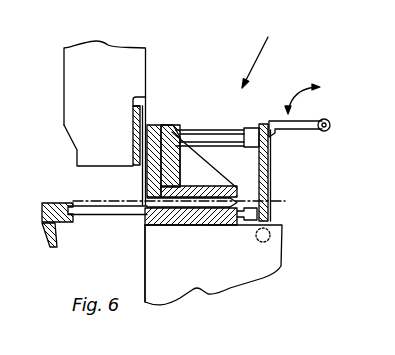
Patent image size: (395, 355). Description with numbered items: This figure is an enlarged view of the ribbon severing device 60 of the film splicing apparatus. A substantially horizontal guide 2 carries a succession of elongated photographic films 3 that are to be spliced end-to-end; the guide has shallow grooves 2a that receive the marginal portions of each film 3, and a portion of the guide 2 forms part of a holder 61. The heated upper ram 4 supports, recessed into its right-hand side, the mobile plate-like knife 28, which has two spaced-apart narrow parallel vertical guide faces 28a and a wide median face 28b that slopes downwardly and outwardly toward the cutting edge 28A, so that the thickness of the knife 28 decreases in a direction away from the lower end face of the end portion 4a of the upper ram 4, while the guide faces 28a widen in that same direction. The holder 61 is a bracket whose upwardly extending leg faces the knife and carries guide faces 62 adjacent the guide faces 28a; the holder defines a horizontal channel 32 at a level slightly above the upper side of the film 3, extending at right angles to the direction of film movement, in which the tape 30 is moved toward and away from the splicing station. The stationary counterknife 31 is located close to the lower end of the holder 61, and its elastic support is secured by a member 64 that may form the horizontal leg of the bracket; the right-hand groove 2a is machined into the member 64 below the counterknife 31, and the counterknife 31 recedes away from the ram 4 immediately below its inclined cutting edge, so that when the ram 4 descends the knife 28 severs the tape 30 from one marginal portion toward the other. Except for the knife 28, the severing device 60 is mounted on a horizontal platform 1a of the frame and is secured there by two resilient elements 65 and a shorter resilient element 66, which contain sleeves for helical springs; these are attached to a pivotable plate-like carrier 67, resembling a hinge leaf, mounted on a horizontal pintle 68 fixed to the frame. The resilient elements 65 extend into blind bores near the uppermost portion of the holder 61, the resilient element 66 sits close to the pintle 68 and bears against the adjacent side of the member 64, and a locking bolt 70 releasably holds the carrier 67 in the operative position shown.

The platform 1a is at (203, 282).
The guide 2 is at (44, 232).
The grooves 2a is at (153, 227).
The photographic film 3 is at (89, 218).
The upper ram 4 is at (72, 80).
The end portion 4a is at (84, 150).
The mobile knife 28 is at (147, 91).
The guide faces 28a is at (141, 102).
The median face 28b is at (143, 117).
The cutting edge 28A is at (137, 160).
The tape 30 is at (84, 199).
The counterknife 31 is at (147, 192).
The channel 32 is at (217, 181).
The severing device 60 is at (261, 52).
The holder 61 is at (173, 128).
The guide faces 62 is at (143, 177).
The member 64 is at (210, 226).
The resilient elements 65 is at (245, 129).
The resilient element 66 is at (247, 226).
The carrier 67 is at (268, 166).
The pintle 68 is at (285, 243).
The locking bolt 70 is at (302, 119).